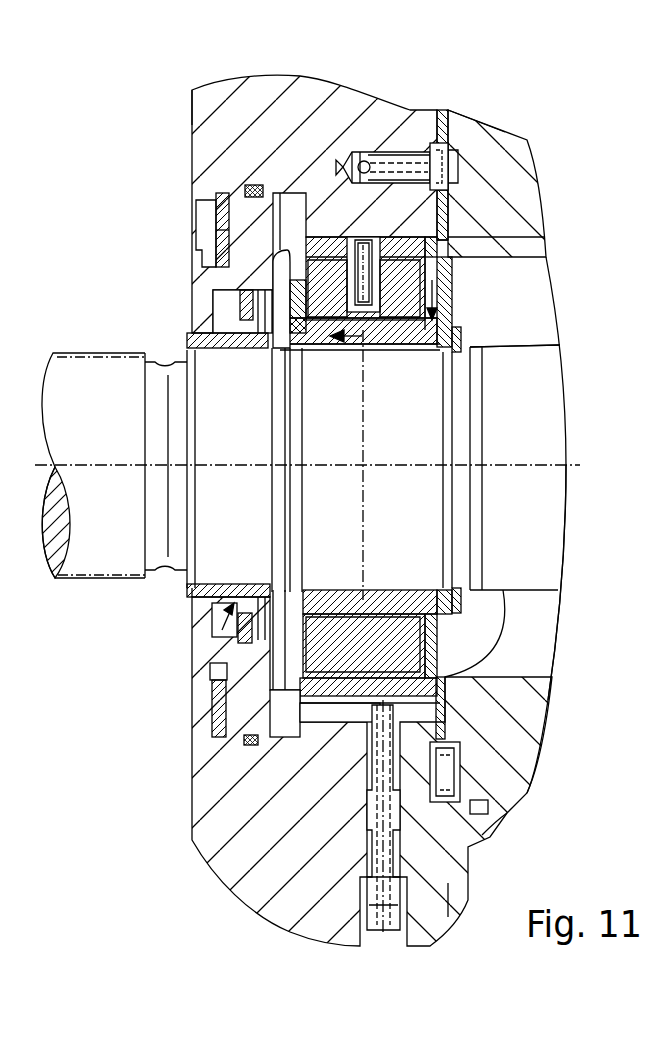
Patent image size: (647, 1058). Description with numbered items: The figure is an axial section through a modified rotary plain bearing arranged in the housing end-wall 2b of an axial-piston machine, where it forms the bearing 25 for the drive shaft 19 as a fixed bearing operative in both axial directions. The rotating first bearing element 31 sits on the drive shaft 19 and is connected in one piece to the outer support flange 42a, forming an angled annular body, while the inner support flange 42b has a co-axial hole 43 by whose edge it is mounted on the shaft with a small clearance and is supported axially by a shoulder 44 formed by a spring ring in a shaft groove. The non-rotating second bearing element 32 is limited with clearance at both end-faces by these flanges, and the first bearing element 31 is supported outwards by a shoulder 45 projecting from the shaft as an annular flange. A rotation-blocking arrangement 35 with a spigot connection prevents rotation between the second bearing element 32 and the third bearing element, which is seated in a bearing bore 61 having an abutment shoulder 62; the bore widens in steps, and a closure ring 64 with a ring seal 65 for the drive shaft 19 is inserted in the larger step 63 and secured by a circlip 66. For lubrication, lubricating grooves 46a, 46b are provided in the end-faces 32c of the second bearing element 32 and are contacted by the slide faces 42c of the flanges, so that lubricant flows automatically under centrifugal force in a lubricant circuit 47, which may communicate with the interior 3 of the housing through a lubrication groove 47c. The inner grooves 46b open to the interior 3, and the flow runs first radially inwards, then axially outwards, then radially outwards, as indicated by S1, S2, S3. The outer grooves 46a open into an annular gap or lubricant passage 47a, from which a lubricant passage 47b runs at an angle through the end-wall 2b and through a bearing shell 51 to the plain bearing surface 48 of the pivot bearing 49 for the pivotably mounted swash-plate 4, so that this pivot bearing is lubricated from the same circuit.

The housing end-wall 2b is at (230, 868).
The interior 3 is at (540, 302).
The swash-plate 4 is at (530, 710).
The drive shaft 19 is at (553, 507).
The bearing 25 is at (307, 172).
The first bearing element 31 is at (378, 352).
The second bearing element 32 is at (390, 236).
The end-faces of the second bearing element 32c is at (308, 590).
The rotation-blocking arrangement 35 is at (322, 226).
The outer support flange 42a is at (233, 326).
The inner support flange 42b is at (507, 253).
The slide faces 42c is at (286, 194).
The co-axial hole 43 is at (451, 375).
The shoulder 44 is at (504, 346).
The shoulder 45 is at (311, 346).
The lubricating grooves 46a is at (322, 327).
The lubricating grooves 46b is at (392, 340).
The lubricant circuit 47 is at (359, 787).
The lubricant passage 47a is at (212, 665).
The lubricant passage 47b is at (327, 745).
The lubrication groove 47c is at (449, 774).
The plain bearing surface 48 is at (456, 166).
The pivot bearing 49 is at (462, 141).
The bearing shell 51 is at (443, 118).
The bearing bore 61 is at (349, 226).
The abutment shoulder 62 is at (450, 205).
The larger step 63 is at (200, 94).
The closure ring 64 is at (214, 224).
The ring seal 65 is at (222, 318).
The circlip 66 is at (200, 246).
The direction of flow S1 is at (445, 294).
The direction of flow S2 is at (360, 336).
The direction of flow S3 is at (222, 628).